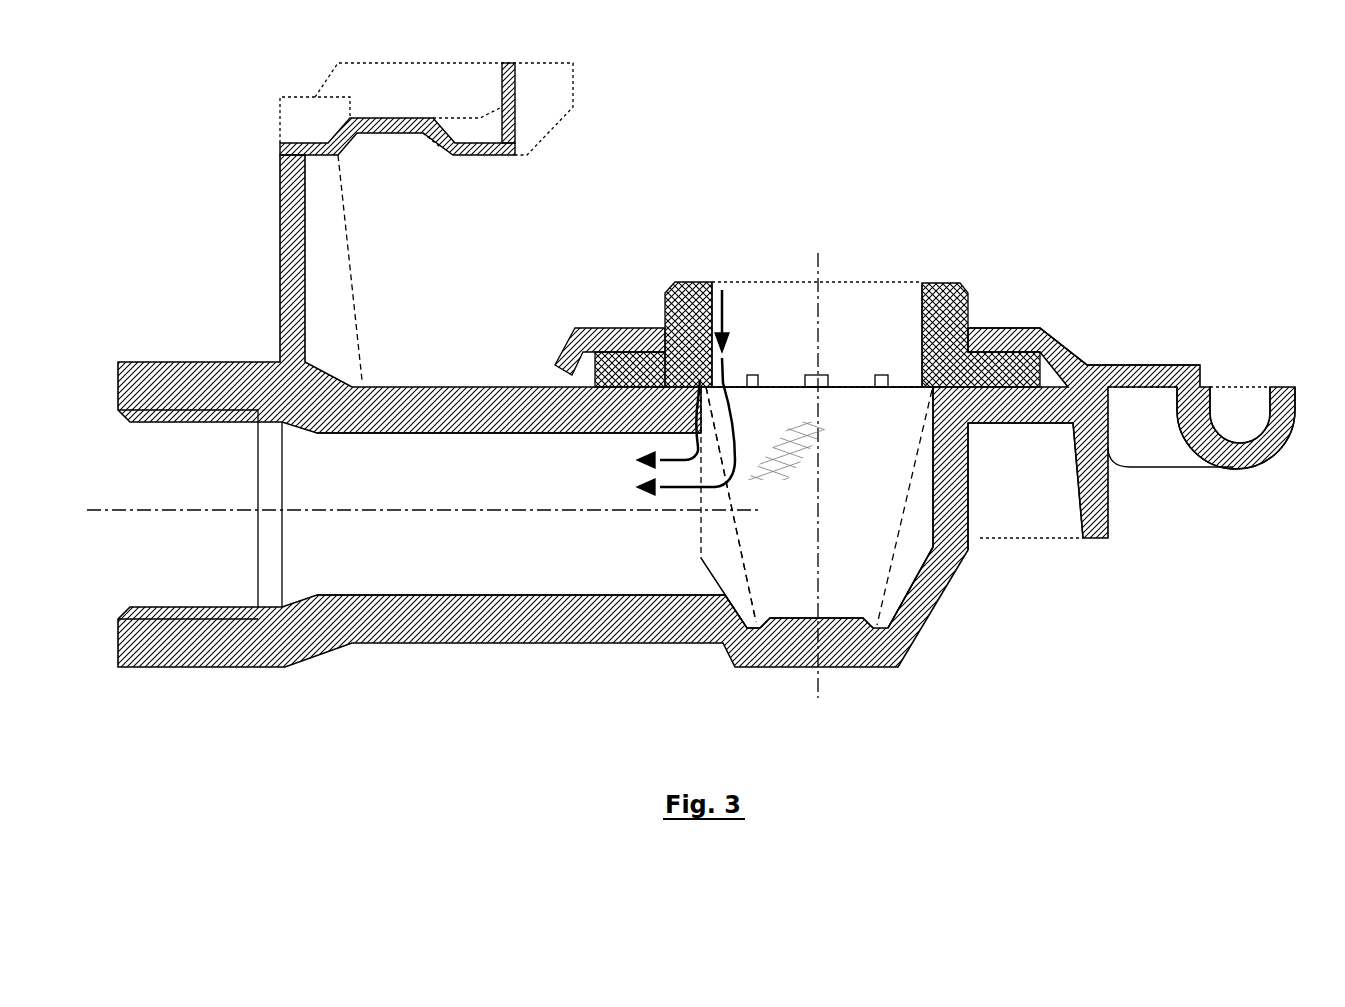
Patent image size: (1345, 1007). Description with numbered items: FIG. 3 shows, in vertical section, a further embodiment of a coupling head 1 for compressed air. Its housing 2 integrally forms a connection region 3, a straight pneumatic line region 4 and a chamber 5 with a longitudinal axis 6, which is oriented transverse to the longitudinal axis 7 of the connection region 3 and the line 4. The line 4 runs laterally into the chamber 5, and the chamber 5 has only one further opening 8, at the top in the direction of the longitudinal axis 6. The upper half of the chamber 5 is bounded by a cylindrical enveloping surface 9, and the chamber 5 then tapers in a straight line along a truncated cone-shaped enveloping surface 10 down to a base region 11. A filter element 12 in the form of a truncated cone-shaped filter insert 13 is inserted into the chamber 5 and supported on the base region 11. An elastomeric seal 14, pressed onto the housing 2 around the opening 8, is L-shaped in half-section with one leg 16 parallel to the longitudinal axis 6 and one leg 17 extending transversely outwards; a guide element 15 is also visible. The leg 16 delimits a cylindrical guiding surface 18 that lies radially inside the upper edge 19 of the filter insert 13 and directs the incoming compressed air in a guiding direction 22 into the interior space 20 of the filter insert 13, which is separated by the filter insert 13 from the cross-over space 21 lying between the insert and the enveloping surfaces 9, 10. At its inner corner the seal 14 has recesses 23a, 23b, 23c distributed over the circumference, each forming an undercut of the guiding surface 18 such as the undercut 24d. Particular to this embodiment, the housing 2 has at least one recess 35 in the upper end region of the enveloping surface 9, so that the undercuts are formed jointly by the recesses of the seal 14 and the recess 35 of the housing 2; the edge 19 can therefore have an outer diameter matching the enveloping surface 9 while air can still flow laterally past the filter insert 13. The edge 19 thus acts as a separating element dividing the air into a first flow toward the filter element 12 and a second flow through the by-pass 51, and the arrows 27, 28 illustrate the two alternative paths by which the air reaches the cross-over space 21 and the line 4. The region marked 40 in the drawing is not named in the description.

The coupling head 1 is at (780, 168).
The housing 2 is at (530, 632).
The connection region 3 is at (176, 577).
The pneumatic line region 4 is at (469, 577).
The chamber 5 is at (841, 592).
The longitudinal axis 6 is at (818, 253).
The longitudinal axis 7 is at (100, 513).
The opening 8 is at (868, 387).
The cylindrical enveloping surface 9 is at (933, 477).
The truncated cone-shaped enveloping surface 10 is at (917, 580).
The base region 11 is at (848, 613).
The filter element 12 is at (739, 540).
The filter insert 13 is at (731, 504).
The seal 14 is at (953, 302).
The guide element 15 is at (1240, 468).
The leg 16 is at (673, 303).
The leg 17 is at (617, 368).
The guiding surface 18 is at (922, 312).
The upper edge 19 is at (933, 390).
The interior space 20 is at (770, 592).
The cross-over space 21 is at (708, 540).
The guiding direction 22 is at (724, 310).
The recess 23a is at (751, 375).
The recess 23b is at (828, 375).
The recess 23c is at (880, 375).
The undercut 24d is at (947, 393).
The arrow 27 is at (655, 458).
The arrow 28 is at (728, 408).
The recess 35 is at (967, 423).
The receiving space 40 is at (780, 324).
The by-pass 51 is at (700, 362).